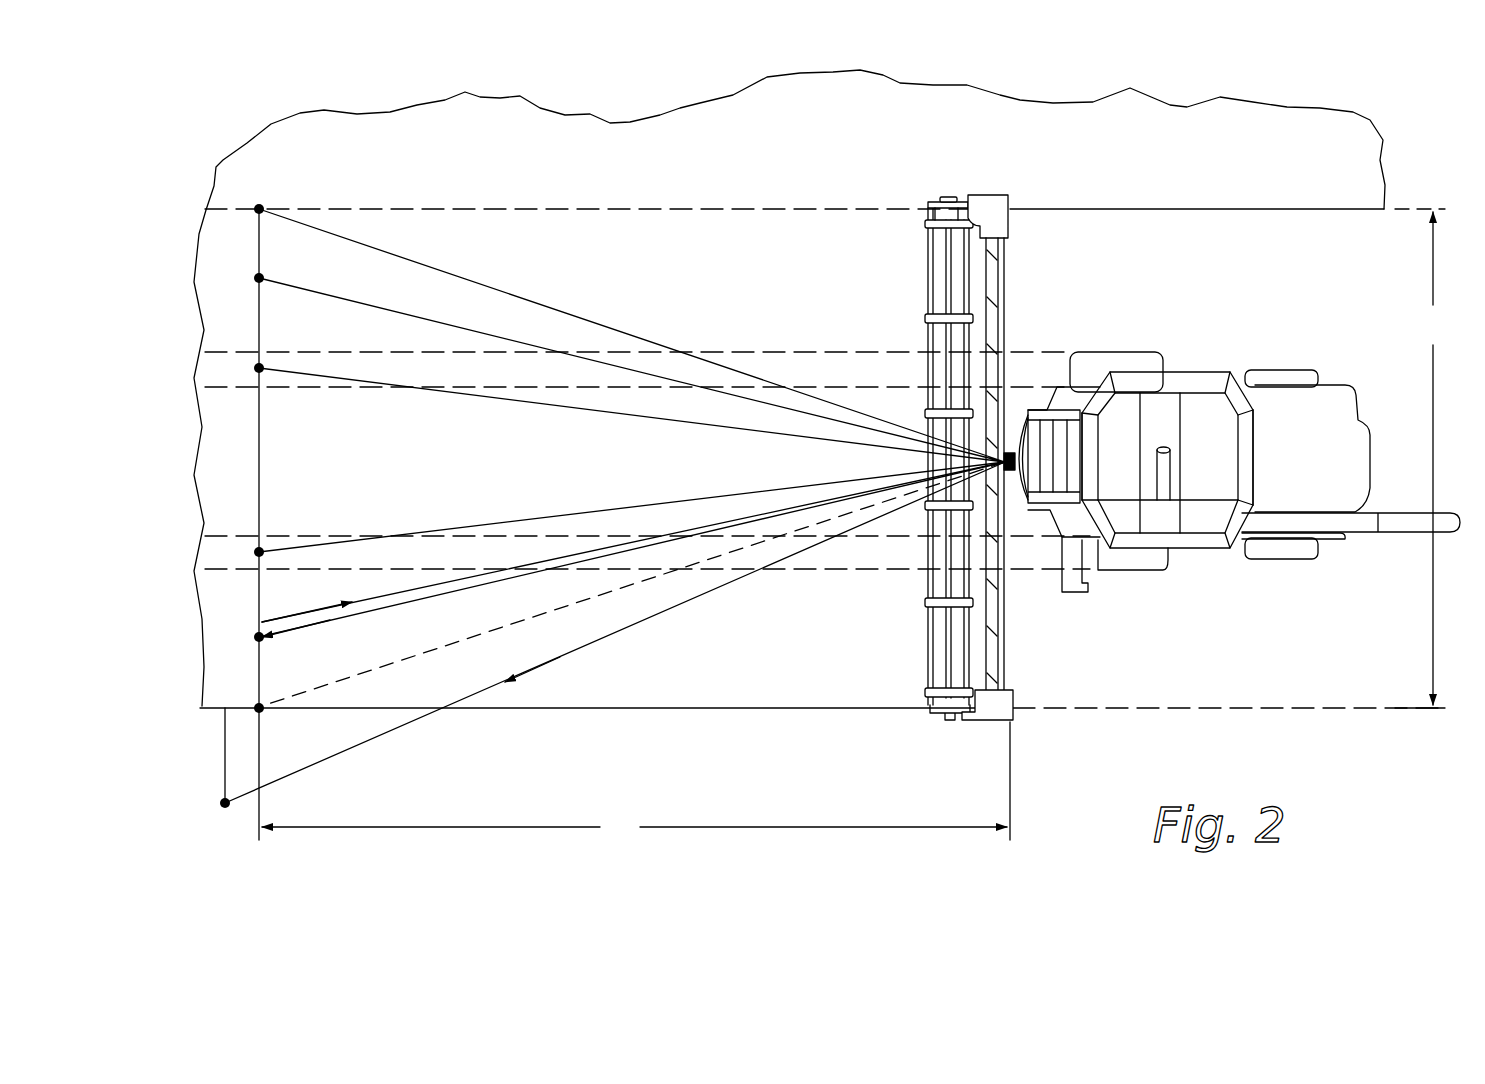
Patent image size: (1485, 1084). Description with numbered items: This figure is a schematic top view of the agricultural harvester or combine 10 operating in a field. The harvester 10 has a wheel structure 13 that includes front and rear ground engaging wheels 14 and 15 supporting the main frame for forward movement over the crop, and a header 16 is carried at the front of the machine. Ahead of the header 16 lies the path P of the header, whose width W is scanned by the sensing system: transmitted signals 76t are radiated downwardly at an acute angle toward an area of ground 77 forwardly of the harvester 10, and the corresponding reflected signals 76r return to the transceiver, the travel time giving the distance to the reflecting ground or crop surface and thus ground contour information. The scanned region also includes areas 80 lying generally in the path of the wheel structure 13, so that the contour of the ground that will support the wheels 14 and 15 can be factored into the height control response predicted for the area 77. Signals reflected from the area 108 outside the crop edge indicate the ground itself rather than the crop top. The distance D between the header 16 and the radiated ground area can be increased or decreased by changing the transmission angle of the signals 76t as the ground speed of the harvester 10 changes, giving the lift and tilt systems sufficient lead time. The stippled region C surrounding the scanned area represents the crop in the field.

The agricultural harvester or combine 10 is at (1232, 450).
The wheel structure 13 is at (1237, 555).
The front ground engaging wheels 14 is at (1128, 345).
The rear ground engaging wheels 15 is at (1290, 370).
The header 16 is at (930, 714).
The area of ground 77 is at (270, 170).
The areas in the path of the wheel structure 80 is at (285, 375).
The reflected signals 76r is at (332, 605).
The transmitted signals 76t is at (318, 625).
The area outside the crop edge 108 is at (585, 655).
The coal seam C is at (748, 118).
The path of the header P is at (700, 243).
The distance D is at (636, 784).
The width of the path W is at (1420, 460).